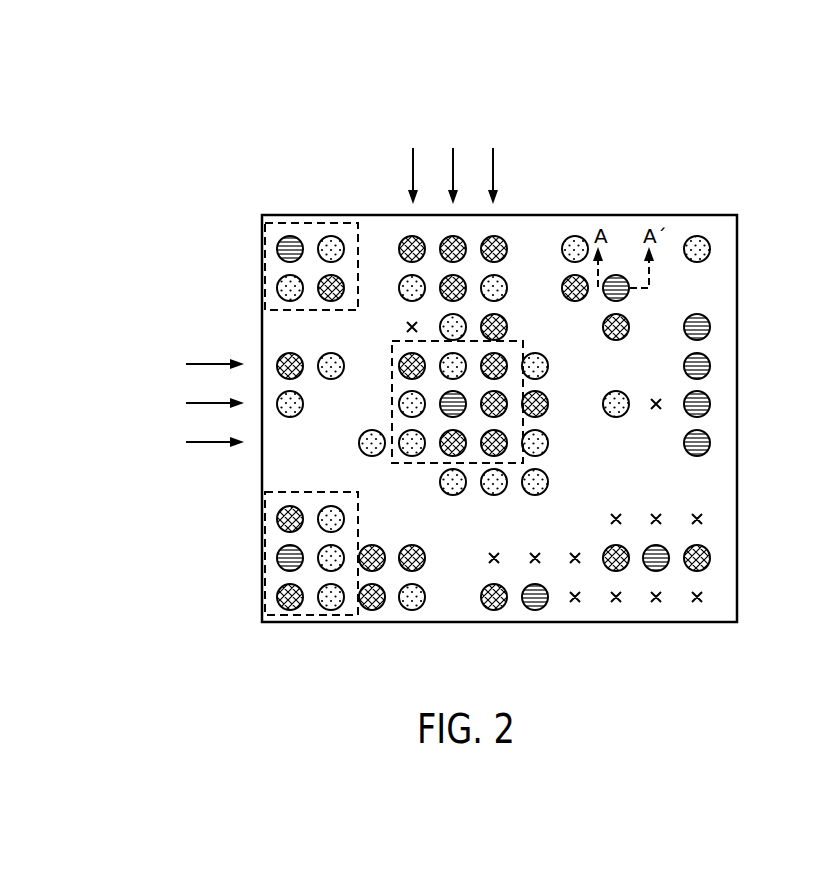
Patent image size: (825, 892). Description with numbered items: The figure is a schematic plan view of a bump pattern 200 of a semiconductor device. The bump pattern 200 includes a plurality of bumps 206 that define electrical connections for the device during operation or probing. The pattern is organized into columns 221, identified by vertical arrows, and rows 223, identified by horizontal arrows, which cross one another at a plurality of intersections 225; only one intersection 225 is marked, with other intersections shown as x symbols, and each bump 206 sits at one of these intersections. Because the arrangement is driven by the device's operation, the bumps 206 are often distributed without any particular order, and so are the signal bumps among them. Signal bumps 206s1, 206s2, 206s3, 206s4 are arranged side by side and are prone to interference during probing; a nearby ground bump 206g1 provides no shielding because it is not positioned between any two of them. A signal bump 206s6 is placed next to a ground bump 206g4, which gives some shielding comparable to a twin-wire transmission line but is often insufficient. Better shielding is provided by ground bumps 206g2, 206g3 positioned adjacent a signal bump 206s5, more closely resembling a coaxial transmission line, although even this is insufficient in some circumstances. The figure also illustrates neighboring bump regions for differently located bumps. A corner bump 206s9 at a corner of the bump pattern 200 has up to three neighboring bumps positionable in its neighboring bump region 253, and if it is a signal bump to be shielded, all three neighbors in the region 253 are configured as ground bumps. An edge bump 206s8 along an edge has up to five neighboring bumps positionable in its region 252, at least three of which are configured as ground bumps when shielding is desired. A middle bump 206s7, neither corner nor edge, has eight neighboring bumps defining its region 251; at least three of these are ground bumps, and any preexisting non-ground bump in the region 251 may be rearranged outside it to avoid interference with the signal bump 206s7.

The bump pattern 200 is at (272, 106).
The columns 221 is at (500, 146).
The rows 223 is at (185, 360).
The intersection 225 is at (406, 326).
The neighboring bump region 251 is at (519, 340).
The neighboring bump region 252 is at (265, 608).
The neighboring bump region 253 is at (265, 238).
The bumps 206 is at (372, 610).
The signal bump 206s1 is at (710, 325).
The signal bump 206s2 is at (710, 364).
The signal bump 206s3 is at (710, 402).
The signal bump 206s4 is at (710, 441).
The signal bump 206s5 is at (662, 571).
The signal bump 206s6 is at (533, 610).
The bump 206s7 is at (441, 397).
The edge bump 206s8 is at (278, 560).
The corner bump 206s9 is at (292, 236).
The ground bump 206g1 is at (616, 418).
The ground bump 206g2 is at (607, 570).
The ground bump 206g3 is at (705, 569).
The ground bump 206g4 is at (490, 610).